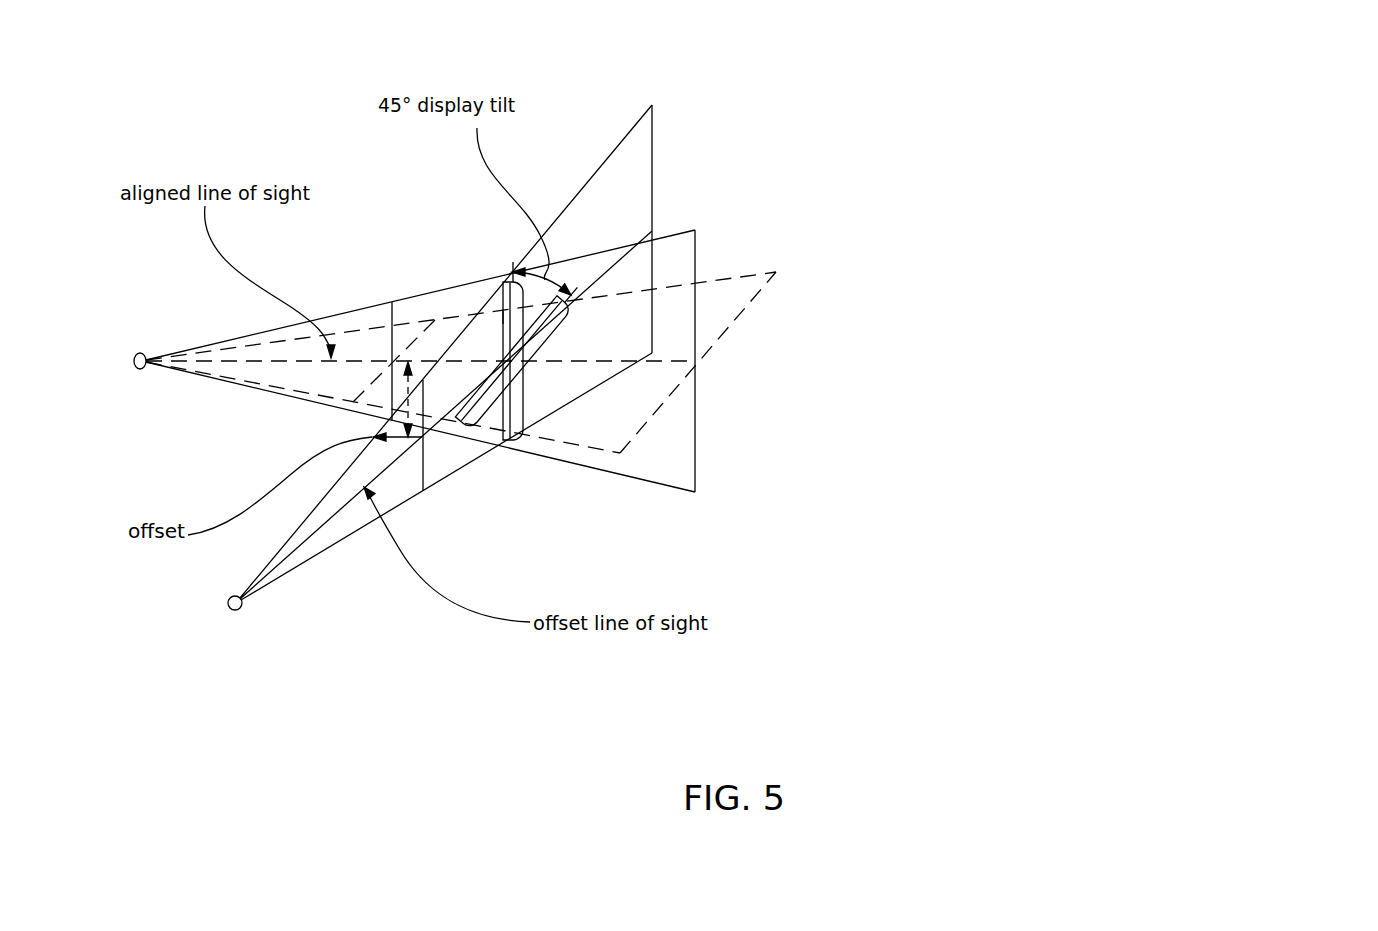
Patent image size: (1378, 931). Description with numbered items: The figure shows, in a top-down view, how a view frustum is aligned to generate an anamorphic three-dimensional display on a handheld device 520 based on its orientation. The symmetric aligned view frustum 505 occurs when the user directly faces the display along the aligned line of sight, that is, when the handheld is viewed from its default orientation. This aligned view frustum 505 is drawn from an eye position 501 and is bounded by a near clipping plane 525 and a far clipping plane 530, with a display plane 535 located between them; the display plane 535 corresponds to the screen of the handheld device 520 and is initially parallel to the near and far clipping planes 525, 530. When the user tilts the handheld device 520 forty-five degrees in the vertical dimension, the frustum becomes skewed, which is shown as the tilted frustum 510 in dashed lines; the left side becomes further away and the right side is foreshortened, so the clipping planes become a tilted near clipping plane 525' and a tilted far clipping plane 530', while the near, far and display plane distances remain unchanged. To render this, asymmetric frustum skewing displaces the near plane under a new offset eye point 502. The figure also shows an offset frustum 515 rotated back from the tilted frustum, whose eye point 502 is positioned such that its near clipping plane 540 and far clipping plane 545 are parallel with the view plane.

The eye position 501 is at (140, 355).
The offset eye point 502 is at (229, 601).
The aligned view frustum 505 is at (932, 199).
The tilted frustum 510 is at (1198, 256).
The offset frustum 515 is at (1362, 94).
The handheld device 520 is at (558, 323).
The near clipping plane 525 is at (367, 318).
The tilted near clipping plane 525' is at (407, 317).
The far clipping plane 530 is at (760, 380).
The tilted far clipping plane 530' is at (745, 362).
The display plane 535 is at (504, 316).
The near clipping plane of offset frustum 540 is at (422, 471).
The far clipping plane of offset frustum 545 is at (497, 352).